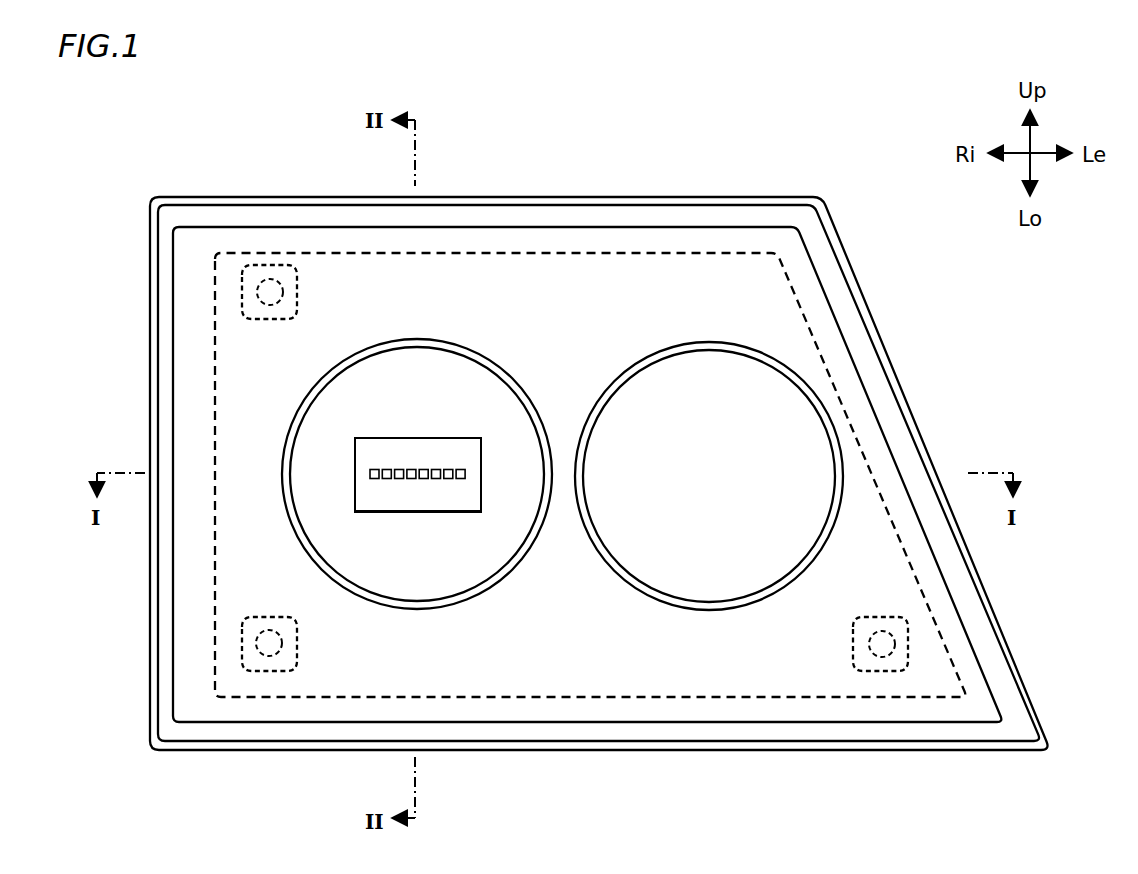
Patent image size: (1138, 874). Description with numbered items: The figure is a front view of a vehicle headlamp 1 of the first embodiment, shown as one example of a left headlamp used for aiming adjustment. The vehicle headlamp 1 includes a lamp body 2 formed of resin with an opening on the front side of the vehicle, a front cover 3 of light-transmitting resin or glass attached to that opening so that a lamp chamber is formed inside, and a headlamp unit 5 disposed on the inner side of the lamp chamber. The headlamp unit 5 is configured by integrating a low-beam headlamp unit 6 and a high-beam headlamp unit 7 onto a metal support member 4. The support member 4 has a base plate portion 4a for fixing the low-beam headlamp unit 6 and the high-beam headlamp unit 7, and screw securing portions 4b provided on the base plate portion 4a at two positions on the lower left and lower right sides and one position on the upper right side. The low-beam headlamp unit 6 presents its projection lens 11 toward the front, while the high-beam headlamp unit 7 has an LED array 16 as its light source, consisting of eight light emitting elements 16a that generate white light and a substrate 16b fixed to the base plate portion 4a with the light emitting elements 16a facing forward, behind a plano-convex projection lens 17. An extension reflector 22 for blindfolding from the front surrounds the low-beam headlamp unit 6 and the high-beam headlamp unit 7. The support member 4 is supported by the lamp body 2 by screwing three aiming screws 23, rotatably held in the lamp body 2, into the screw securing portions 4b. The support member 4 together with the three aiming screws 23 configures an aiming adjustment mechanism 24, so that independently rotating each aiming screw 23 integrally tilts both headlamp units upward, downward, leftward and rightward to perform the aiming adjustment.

The vehicle headlamp 1 is at (599, 413).
The lamp body 2 is at (856, 279).
The front cover 3 is at (860, 342).
The support member 4 is at (206, 333).
The base plate portion 4a is at (818, 675).
The screw securing portions 4b is at (270, 262).
The headlamp unit 5 is at (562, 440).
The low-beam headlamp unit 6 is at (705, 340).
The high-beam headlamp unit 7 is at (453, 346).
The projection lens 11 is at (726, 583).
The LED array 16 is at (390, 610).
The light emitting elements 16a is at (465, 462).
The substrate 16b is at (443, 512).
The projection lens 17 is at (507, 534).
The extension reflector 22 is at (672, 708).
The aiming screws 23 is at (257, 290).
The aiming adjustment mechanism 24 is at (542, 488).